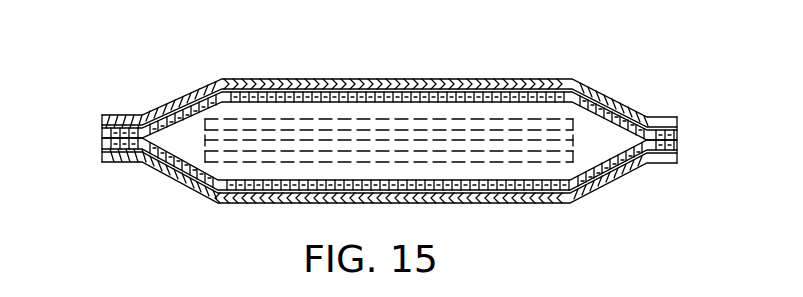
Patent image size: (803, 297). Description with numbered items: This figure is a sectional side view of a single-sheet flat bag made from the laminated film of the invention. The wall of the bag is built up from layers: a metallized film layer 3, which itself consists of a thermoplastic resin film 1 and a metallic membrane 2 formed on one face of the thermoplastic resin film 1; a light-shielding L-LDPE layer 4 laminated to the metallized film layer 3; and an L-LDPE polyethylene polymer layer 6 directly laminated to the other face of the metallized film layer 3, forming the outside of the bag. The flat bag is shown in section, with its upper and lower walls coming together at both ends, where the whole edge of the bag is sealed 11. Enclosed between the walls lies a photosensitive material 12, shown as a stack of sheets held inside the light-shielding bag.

The thermoplastic resin film 1 is at (474, 91).
The metallic membrane 2 is at (500, 100).
The metallized film layer 3 is at (389, 99).
The light-shielding L-LDPE layer 4 is at (400, 90).
The L-LDPE polyethylene polymer layer 6 is at (368, 87).
The sealed edge 11 is at (102, 136).
The photosensitive material 12 is at (262, 118).